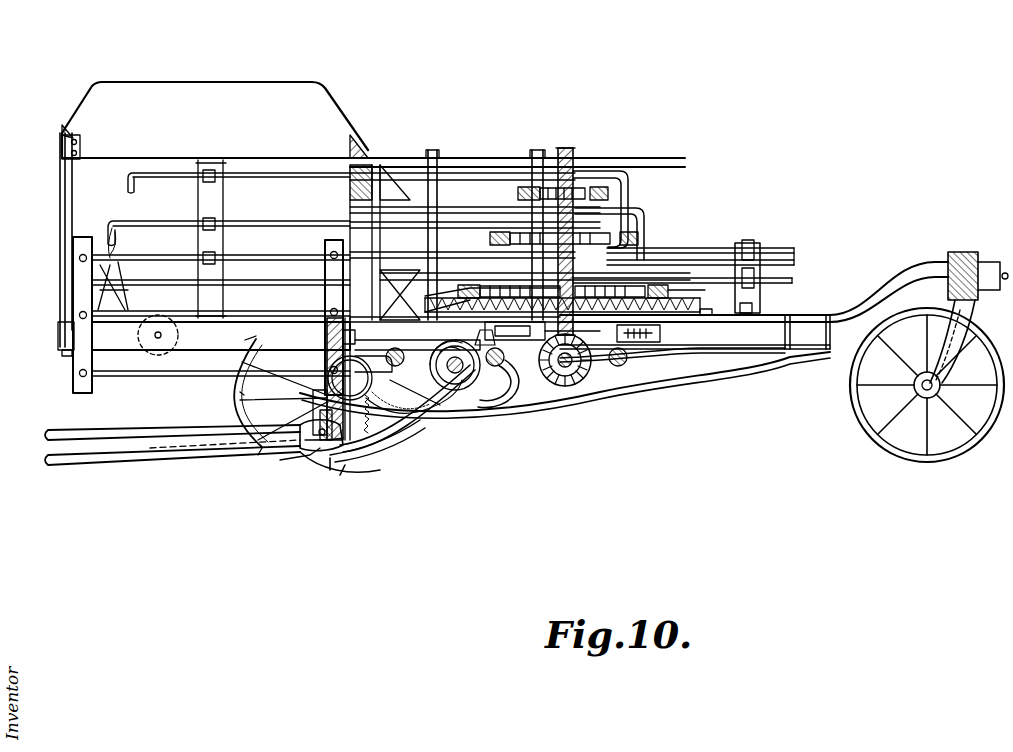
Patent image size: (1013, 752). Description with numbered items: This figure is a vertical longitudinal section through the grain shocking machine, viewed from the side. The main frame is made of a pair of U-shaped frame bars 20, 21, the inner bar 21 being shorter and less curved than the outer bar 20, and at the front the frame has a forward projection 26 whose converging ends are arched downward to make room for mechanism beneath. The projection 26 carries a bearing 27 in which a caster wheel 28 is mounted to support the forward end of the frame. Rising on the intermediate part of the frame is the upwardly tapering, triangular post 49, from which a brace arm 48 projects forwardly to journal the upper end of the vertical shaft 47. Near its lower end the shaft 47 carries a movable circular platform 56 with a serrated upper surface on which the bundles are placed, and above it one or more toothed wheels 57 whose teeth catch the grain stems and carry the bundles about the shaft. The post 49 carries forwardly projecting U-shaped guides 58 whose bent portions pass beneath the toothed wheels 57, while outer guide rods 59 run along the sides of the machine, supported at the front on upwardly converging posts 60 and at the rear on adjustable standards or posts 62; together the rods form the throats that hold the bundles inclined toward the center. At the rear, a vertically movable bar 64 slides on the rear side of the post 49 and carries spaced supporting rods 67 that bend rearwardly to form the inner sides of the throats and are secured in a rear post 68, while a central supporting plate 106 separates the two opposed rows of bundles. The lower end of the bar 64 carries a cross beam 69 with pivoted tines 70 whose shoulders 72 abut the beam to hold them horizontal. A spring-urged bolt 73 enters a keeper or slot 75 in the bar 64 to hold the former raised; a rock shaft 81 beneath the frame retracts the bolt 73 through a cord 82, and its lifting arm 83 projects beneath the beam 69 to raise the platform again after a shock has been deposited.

The supporting plate 106 is at (213, 95).
The rear post 68 is at (78, 247).
The supporting rods 67 is at (140, 313).
The standards or posts 62 is at (213, 170).
The frame bar 21 is at (135, 343).
The vertically movable bar 64 is at (327, 338).
The upwardly tapering post 49 is at (355, 192).
The brace arm 48 is at (486, 160).
The vertical shaft 47 is at (565, 150).
The guides 58 is at (488, 216).
The toothed wheels 57 is at (590, 190).
The posts 60 is at (748, 243).
The outer guide rods 59 is at (800, 278).
The frame bar 20 is at (684, 340).
The movable circular platform 56 is at (714, 355).
The forward projection 26 is at (608, 390).
The bearing 27 is at (950, 262).
The caster wheel 28 is at (853, 414).
The pivoted tines 70 is at (120, 440).
The shoulders 72 is at (300, 455).
The keeper or slot 75 is at (343, 433).
The cross beam 69 is at (343, 452).
The cord 82 is at (506, 353).
The lifting arm 83 is at (430, 415).
The rock shaft 81 is at (514, 380).
The bolt 73 is at (400, 438).